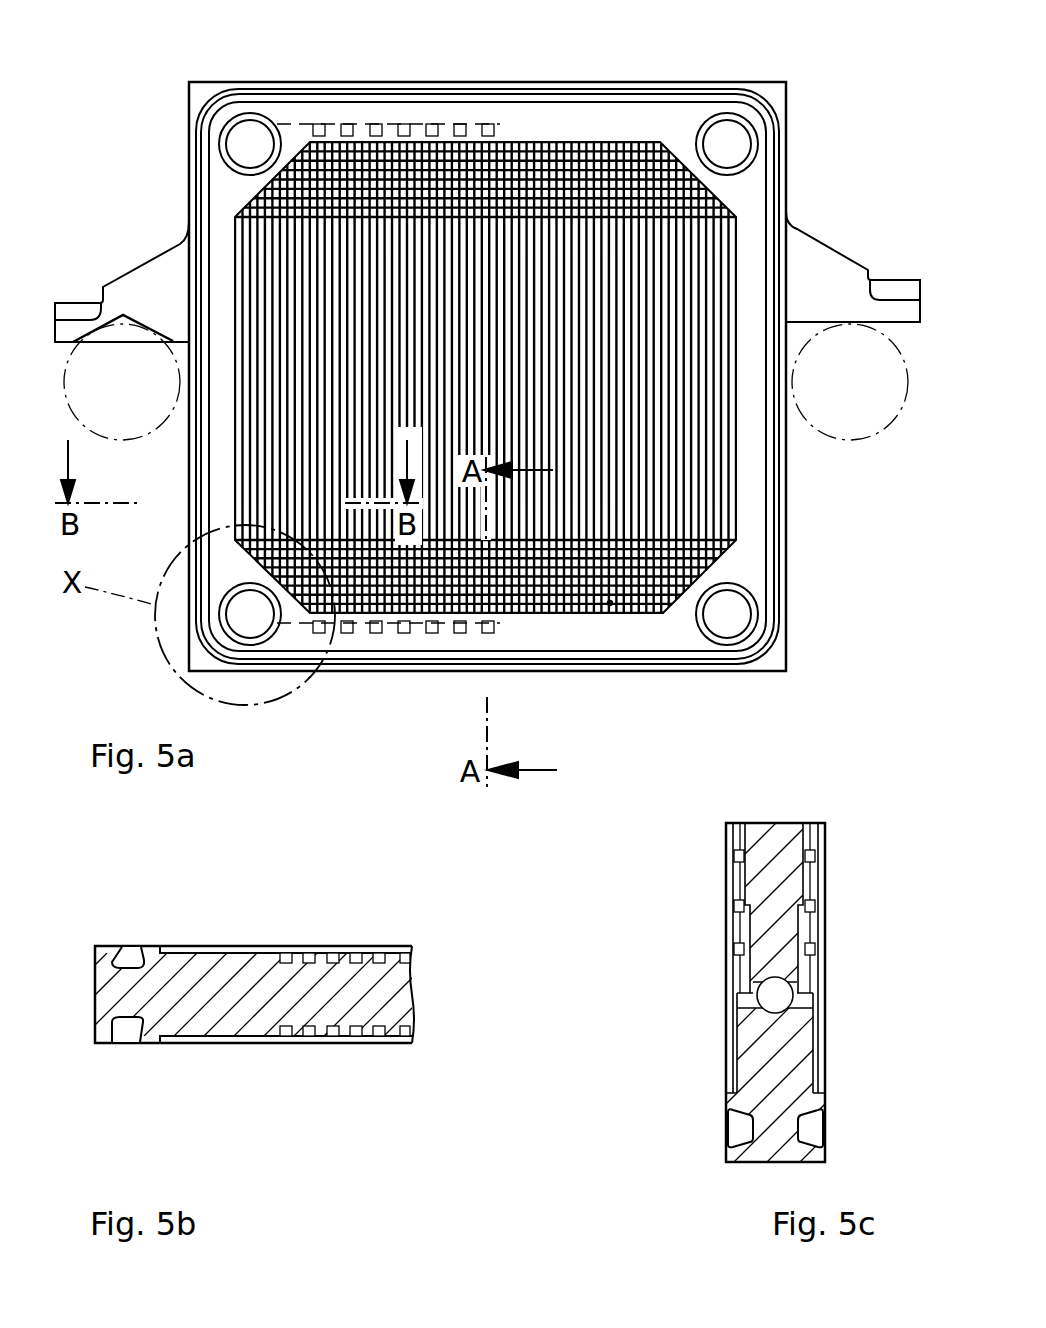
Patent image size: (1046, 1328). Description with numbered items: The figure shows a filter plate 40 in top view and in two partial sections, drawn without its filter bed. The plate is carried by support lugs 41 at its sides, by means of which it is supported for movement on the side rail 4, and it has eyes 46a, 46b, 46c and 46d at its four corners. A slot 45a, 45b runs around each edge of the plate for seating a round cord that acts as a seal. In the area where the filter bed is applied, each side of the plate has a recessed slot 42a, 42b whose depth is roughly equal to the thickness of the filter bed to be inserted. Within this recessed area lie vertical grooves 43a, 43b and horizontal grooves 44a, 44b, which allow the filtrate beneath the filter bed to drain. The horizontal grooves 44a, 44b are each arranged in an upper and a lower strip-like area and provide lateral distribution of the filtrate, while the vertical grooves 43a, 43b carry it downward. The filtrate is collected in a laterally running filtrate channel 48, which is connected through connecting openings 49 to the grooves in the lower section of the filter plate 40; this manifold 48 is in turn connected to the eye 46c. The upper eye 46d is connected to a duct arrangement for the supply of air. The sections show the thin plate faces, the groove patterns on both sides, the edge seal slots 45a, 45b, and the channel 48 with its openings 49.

In FIG. 5A, the side rail 4 is at (122, 428).
In FIG. 5A, the filter plate 40 is at (641, 75).
In FIG. 5B, the filter plate 40 is at (387, 990).
In FIG. 5C, the filter plate 40 is at (770, 832).
In FIG. 5A, the support lugs 41 is at (140, 287).
In FIG. 5A, the slot 42a is at (753, 198).
In FIG. 5B, the slot 42a is at (198, 1043).
In FIG. 5C, the slot 42a is at (730, 1065).
In FIG. 5B, the slot 42b is at (207, 950).
In FIG. 5C, the slot 42b is at (820, 1055).
In FIG. 5A, the vertical grooves 43a is at (720, 495).
In FIG. 5B, the vertical grooves 43a is at (333, 1032).
In FIG. 5C, the vertical grooves 43a is at (740, 882).
In FIG. 5B, the vertical grooves 43b is at (357, 952).
In FIG. 5C, the vertical grooves 43b is at (810, 882).
In FIG. 5A, the horizontal grooves 44a is at (610, 605).
In FIG. 5C, the horizontal grooves 44a is at (735, 857).
In FIG. 5C, the horizontal grooves 44b is at (815, 857).
In FIG. 5A, the slot 45a is at (777, 575).
In FIG. 5B, the slot 45a is at (130, 1033).
In FIG. 5C, the slot 45a is at (740, 1130).
In FIG. 5B, the slot 45b is at (125, 952).
In FIG. 5C, the slot 45b is at (812, 1130).
In FIG. 5A, the eye 46a is at (735, 134).
In FIG. 5A, the eye 46b is at (733, 625).
In FIG. 5A, the eye 46c is at (240, 623).
In FIG. 5A, the upper eye 46d is at (240, 148).
In FIG. 5C, the filtrate channel 48 is at (778, 1000).
In FIG. 5C, the connecting openings 49 is at (745, 1000).